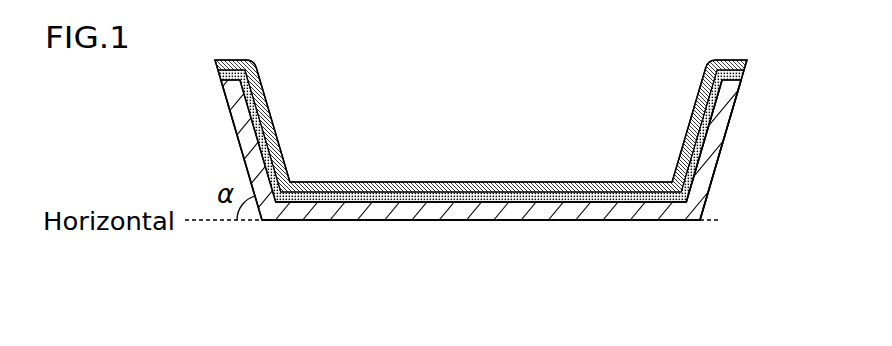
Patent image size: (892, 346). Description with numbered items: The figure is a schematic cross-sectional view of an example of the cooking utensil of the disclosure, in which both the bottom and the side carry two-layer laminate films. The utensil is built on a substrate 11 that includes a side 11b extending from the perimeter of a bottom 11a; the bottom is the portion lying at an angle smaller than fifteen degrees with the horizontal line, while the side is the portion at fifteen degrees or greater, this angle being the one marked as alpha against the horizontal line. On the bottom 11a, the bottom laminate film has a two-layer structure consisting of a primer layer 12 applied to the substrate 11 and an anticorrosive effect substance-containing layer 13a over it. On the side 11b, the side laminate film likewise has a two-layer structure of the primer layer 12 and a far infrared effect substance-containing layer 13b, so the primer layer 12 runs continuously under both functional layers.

The substrate 11 is at (748, 278).
The bottom of substrate 11a is at (611, 209).
The side of substrate 11b is at (710, 160).
The primer layer 12 is at (710, 128).
The anticorrosive effect substance-containing layer 13a is at (399, 183).
The far infrared effect substance-containing layer 13b is at (743, 67).